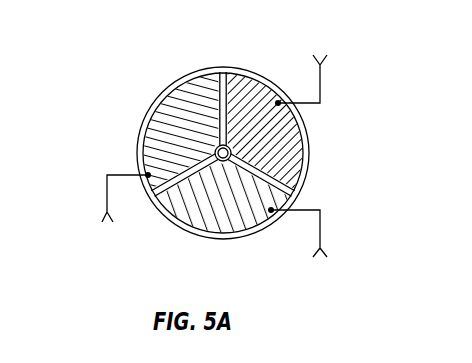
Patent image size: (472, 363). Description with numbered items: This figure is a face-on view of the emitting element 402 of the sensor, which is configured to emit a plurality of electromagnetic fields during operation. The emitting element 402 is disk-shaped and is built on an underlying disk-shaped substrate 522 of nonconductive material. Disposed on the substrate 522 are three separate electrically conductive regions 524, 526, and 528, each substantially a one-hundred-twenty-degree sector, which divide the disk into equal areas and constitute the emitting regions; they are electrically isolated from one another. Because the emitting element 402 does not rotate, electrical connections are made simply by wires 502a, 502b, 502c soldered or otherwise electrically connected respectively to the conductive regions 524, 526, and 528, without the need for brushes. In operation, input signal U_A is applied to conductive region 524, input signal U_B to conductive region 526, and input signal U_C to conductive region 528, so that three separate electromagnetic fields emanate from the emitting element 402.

The emitting element 402 is at (218, 66).
The electrically conductive region 528 is at (155, 103).
The disk-shaped substrate 522 is at (141, 153).
The electrically conductive region 524 is at (304, 155).
The electrically conductive region 526 is at (222, 233).
The wire 502a is at (322, 83).
The wire 502b is at (323, 228).
The wire 502c is at (103, 197).